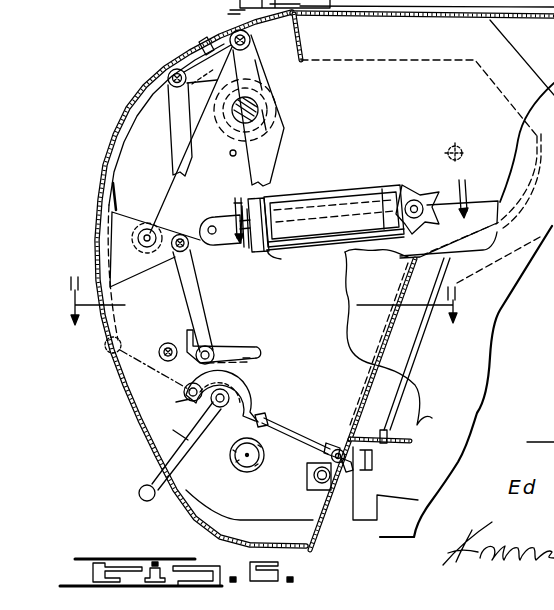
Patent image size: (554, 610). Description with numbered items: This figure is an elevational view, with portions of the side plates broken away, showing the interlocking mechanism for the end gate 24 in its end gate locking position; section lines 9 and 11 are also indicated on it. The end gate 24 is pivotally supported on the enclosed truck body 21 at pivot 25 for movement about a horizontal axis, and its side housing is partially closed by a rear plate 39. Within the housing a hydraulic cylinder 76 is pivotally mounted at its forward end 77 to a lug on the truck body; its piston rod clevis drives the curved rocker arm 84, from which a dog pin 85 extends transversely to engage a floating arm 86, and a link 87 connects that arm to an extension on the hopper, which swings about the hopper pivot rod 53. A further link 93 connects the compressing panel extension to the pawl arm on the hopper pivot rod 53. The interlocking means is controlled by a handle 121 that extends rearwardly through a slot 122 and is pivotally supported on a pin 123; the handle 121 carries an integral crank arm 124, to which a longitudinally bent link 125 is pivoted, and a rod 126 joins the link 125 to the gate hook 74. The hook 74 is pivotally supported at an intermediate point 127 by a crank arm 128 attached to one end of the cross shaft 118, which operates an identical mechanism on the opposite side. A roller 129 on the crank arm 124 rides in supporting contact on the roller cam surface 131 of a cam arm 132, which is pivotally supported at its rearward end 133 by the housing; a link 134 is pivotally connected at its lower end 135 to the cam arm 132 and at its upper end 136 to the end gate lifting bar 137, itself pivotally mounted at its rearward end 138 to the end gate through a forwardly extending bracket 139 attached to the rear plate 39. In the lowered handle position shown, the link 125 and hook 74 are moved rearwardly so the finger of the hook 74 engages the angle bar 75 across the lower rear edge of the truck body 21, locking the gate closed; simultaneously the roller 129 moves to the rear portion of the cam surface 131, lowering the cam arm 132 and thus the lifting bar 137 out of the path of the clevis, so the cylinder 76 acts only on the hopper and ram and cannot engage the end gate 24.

The truck body 21 is at (487, 392).
The end gate 24 is at (90, 248).
The pivot 25 is at (461, 142).
The rear plate 39 is at (123, 113).
The hopper pivot rod 53 is at (234, 464).
The hook 74 is at (380, 468).
The angle bar 75 is at (395, 444).
The hydraulic cylinder 76 is at (348, 198).
The cylinder pivot end 77 is at (418, 201).
The rocker arm 84 is at (262, 181).
The pin 85 is at (233, 152).
The floating arm 86 is at (194, 47).
The link 87 is at (180, 125).
The link 93 is at (270, 157).
The solid shaft 118 is at (312, 468).
The handle 121 is at (163, 473).
The slot 122 is at (178, 398).
The pin 123 is at (243, 358).
The crank arm 124 is at (173, 430).
The link 125 is at (257, 388).
The rod 126 is at (283, 402).
The intermediate pivot point 127 is at (343, 446).
The crank arm 128 is at (331, 454).
The roller 129 is at (173, 390).
The roller cam surface 131 is at (170, 383).
The cam arm 132 is at (190, 300).
The rearward end 133 is at (187, 340).
The link 134 is at (202, 292).
The lower end 135 is at (217, 340).
The upper end 136 is at (174, 262).
The end gate lifting bar 137 is at (203, 248).
The rearward end 138 is at (167, 203).
The bracket 139 is at (103, 200).
The section line 9- 9 is at (305, 324).
The section line 11- 11 is at (369, 229).